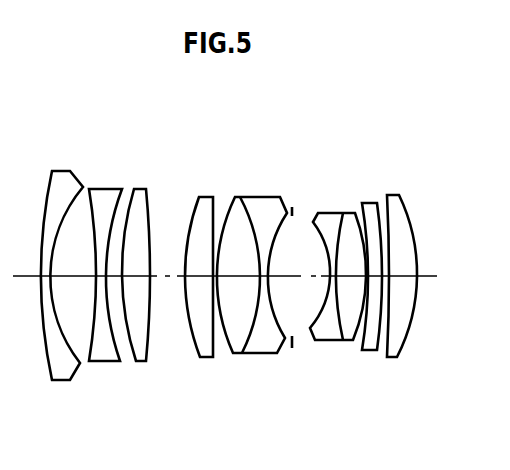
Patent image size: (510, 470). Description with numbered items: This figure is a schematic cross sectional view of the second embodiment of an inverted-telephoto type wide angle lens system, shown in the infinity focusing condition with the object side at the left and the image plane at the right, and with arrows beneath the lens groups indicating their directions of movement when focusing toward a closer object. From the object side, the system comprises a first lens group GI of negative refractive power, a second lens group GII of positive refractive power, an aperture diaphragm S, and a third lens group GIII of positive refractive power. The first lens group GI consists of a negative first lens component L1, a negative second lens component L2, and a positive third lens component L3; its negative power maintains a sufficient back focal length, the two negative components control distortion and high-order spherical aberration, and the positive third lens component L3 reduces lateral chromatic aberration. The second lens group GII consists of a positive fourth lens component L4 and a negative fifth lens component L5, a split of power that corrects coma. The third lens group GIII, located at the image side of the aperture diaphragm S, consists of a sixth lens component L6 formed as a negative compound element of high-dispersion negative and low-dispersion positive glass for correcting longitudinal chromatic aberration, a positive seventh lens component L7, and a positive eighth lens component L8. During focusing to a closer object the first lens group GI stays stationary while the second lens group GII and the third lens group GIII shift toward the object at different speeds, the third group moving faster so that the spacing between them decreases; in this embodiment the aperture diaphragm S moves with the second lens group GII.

The first lens component L1 is at (67, 171).
The second lens component L2 is at (105, 189).
The third lens component L3 is at (140, 189).
The fourth lens component L4 is at (205, 197).
The fifth lens component L5 is at (263, 197).
The sixth lens component L6 is at (327, 220).
The seventh lens component L7 is at (370, 203).
The eighth lens component L8 is at (388, 195).
The aperture diaphragm S is at (292, 206).
The first lens group GI is at (108, 273).
The second lens group GII is at (245, 273).
The third lens group GIII is at (378, 272).